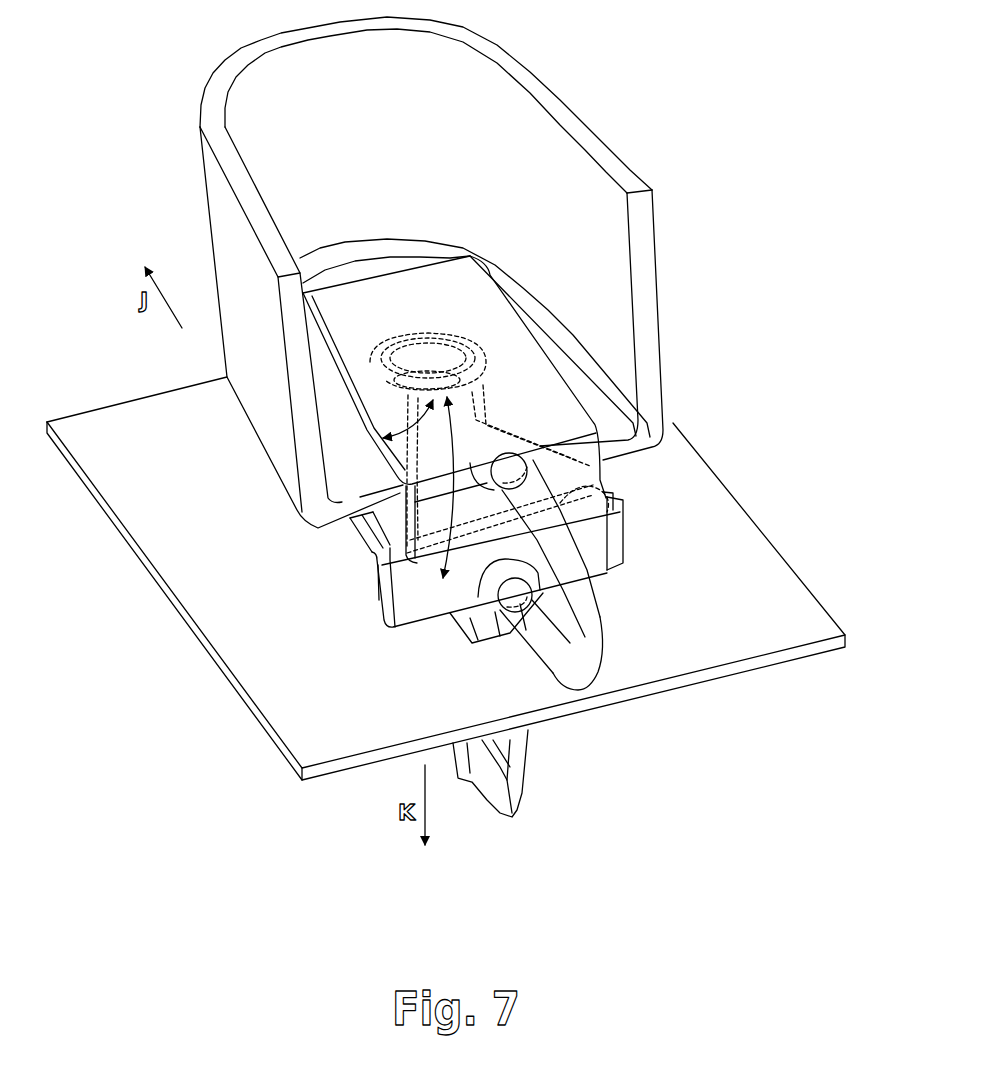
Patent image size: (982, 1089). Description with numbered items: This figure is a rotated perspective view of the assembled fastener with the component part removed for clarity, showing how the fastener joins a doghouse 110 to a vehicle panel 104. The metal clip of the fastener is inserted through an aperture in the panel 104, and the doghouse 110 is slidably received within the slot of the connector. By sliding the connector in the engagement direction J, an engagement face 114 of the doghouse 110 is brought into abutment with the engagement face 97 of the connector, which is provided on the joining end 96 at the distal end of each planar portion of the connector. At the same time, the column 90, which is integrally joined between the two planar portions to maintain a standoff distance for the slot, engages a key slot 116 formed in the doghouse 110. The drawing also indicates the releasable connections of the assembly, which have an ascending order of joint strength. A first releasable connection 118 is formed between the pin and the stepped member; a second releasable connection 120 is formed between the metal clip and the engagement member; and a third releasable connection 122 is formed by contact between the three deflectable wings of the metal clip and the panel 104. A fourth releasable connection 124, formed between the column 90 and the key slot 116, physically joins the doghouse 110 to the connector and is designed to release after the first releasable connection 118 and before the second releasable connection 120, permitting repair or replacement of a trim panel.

The vehicle panel 104 is at (777, 597).
The engagement face 114 is at (650, 253).
The doghouse 110 is at (663, 312).
The key slot 116 is at (490, 360).
The column 90 is at (453, 398).
The joining end 96 is at (545, 447).
The engagement face 97 is at (397, 519).
The first releasable connection 118 is at (407, 513).
The second releasable connection 120 is at (370, 588).
The third releasable connection 122 is at (557, 722).
The fourth releasable connection 124 is at (383, 438).